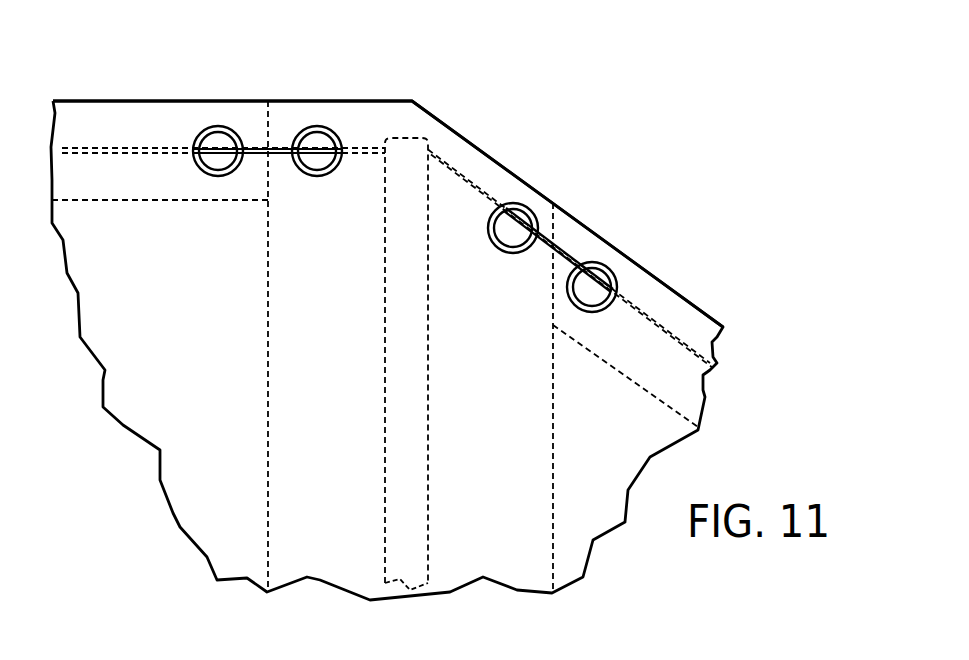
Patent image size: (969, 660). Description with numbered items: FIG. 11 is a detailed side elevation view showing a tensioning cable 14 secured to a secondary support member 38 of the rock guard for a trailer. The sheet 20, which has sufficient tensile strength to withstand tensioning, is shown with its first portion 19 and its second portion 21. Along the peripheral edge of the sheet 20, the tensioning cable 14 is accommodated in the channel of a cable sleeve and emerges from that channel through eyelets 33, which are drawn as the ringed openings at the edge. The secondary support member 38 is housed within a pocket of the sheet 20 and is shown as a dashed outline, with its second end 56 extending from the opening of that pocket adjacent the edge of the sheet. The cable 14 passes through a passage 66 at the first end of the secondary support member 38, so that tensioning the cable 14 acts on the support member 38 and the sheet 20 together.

The tensioning cable 14 is at (255, 110).
The first portion 19 is at (220, 460).
The sheet 20 is at (167, 307).
The second portion 21 is at (620, 454).
The eyelets 33 is at (217, 125).
The secondary support member 38 is at (403, 432).
The second end 56 is at (402, 137).
The passage 66 is at (432, 148).